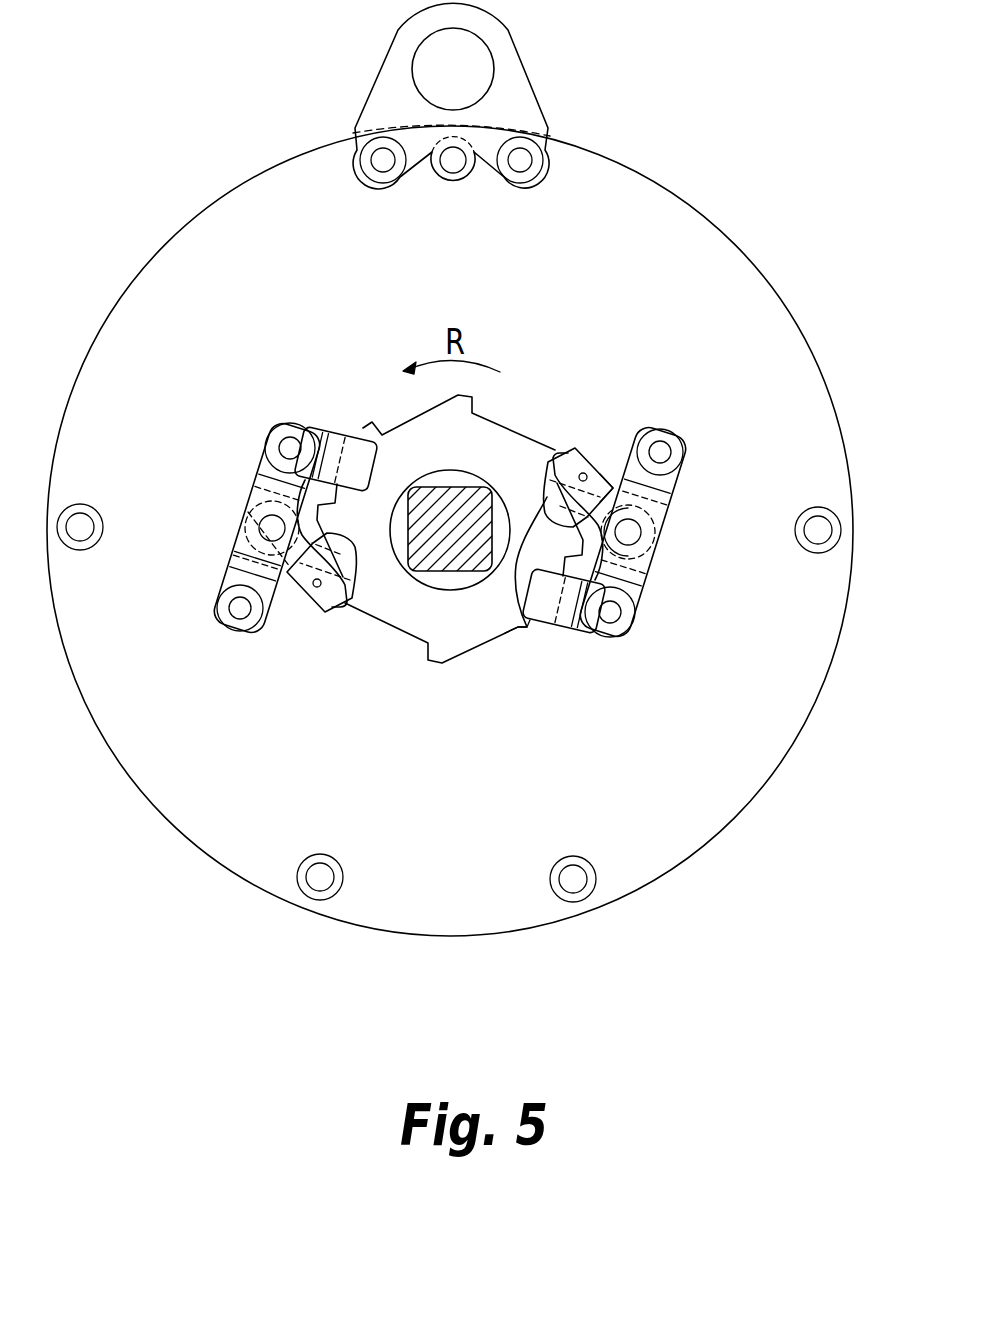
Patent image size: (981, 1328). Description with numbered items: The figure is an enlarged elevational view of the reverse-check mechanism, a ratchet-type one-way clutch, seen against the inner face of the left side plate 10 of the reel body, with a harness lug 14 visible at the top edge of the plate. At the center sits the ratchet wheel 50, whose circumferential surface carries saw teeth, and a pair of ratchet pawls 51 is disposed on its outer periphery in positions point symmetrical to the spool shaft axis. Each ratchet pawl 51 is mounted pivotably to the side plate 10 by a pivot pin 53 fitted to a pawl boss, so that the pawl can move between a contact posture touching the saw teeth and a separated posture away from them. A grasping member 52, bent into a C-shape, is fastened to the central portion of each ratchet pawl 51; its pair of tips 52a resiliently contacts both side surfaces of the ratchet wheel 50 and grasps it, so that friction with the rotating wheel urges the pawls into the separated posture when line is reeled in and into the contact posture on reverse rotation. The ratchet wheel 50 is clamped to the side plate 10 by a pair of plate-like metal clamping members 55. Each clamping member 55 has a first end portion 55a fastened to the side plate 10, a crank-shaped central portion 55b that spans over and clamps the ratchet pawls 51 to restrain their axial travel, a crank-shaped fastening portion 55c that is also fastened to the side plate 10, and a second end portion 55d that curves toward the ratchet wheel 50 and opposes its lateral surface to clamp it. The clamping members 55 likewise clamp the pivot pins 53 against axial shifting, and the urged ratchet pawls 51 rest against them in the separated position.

The left side plate 10 is at (740, 330).
The harness lug 14 is at (515, 99).
The ratchet wheel 50 is at (483, 626).
The ratchet pawl 51 is at (609, 492).
The grasping member 52 is at (549, 461).
The tip of grasping member 52a is at (532, 628).
The pivot pin 53 is at (270, 527).
The clamping member 55 is at (226, 563).
The first end portion 55a is at (222, 583).
The central portion 55b is at (245, 556).
The fastening portion 55c is at (258, 458).
The second end portion 55d is at (350, 444).